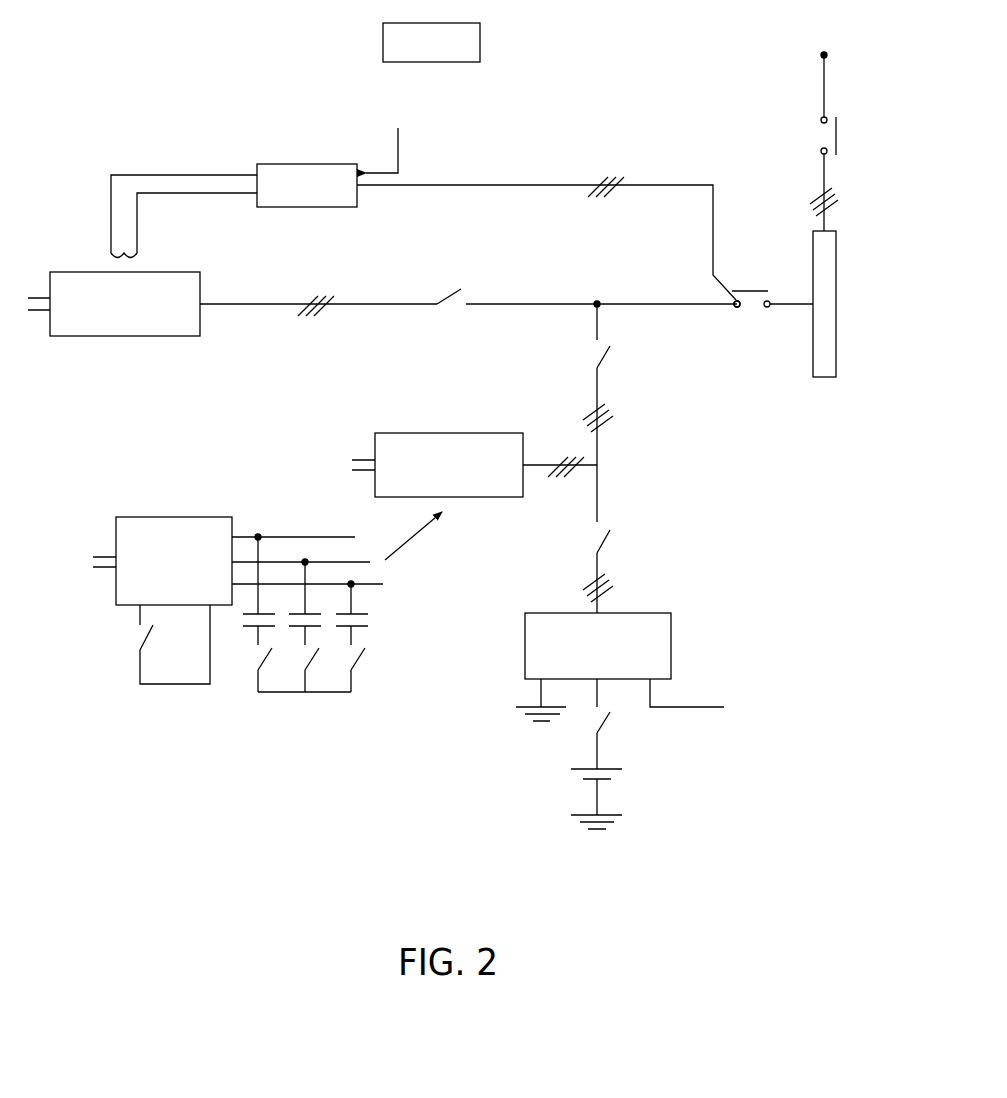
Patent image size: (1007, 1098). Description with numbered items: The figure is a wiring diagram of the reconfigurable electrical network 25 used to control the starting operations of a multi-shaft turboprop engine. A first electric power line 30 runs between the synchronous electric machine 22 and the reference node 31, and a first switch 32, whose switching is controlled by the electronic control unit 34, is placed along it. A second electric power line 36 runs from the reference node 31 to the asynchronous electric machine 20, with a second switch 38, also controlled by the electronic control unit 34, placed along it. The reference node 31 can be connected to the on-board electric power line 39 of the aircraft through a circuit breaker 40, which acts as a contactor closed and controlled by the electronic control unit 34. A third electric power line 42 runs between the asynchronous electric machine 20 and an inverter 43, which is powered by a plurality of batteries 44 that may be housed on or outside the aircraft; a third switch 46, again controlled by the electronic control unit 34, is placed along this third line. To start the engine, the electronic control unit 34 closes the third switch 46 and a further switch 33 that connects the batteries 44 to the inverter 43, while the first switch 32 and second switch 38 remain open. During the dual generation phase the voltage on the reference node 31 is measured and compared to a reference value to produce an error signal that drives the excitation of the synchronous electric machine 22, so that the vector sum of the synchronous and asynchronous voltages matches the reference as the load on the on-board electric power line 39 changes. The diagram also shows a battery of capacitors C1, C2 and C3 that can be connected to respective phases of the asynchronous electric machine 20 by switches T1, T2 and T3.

The asynchronous electric machine 20 is at (400, 441).
The synchronous electric machine 22 is at (192, 272).
The reconfigurable electrical network 25 is at (297, 130).
The first electric power line 30 is at (397, 301).
The reference node 31 is at (742, 312).
The first switch 32 is at (466, 290).
The switch 33 is at (618, 728).
The electronic control unit 34 is at (490, 47).
The second electric power line 36 is at (600, 440).
The second switch 38 is at (579, 350).
The on-board electric power line 39 is at (843, 366).
The circuit breaker 40 is at (755, 283).
The third electric power line 42 is at (600, 603).
The inverter 43 is at (672, 643).
The batteries 44 is at (567, 783).
The third switch 46 is at (616, 540).
The capacitor C1 is at (271, 600).
The capacitor C2 is at (318, 600).
The capacitor C3 is at (365, 600).
The switch T1 is at (272, 675).
The switch T2 is at (319, 675).
The switch T3 is at (365, 675).